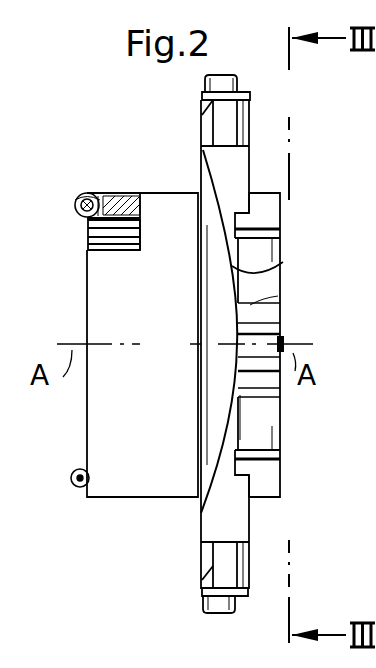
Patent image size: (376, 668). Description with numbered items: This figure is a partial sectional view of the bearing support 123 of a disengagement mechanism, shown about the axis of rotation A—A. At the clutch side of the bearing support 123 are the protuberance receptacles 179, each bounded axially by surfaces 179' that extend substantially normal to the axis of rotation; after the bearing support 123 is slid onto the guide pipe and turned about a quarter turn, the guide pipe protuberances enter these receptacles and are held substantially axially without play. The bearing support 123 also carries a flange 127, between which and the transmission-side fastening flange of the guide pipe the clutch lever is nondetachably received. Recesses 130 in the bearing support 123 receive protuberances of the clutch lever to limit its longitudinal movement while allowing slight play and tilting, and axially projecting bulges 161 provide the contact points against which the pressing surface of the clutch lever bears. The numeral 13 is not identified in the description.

The protuberance receptacles 179 is at (63, 233).
The surface 179' is at (75, 164).
The flange 127 is at (252, 113).
The bearing support 123 is at (266, 193).
The axially projecting bulges 161 is at (283, 262).
The recesses 130 is at (257, 395).
The housing 13 is at (366, 391).